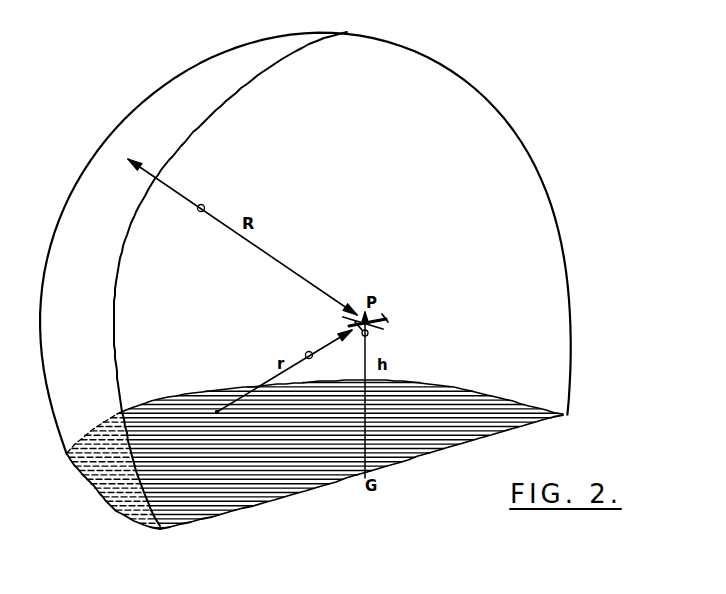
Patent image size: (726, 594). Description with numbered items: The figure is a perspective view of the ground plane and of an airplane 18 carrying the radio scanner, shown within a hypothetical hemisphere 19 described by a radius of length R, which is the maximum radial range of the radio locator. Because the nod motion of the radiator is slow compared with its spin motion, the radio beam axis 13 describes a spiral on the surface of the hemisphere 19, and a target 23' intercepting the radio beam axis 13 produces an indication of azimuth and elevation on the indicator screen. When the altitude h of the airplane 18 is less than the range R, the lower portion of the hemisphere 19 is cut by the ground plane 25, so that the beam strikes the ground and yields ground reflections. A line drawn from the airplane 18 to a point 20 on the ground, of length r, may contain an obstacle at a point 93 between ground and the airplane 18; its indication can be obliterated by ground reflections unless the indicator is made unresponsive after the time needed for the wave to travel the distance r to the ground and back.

The hemisphere 19 is at (497, 108).
The ground plane 25 is at (138, 522).
The radio beam axis 13 is at (284, 262).
The target 23' is at (219, 194).
The point on the ground 20 is at (215, 412).
The point between ground and airplane 93 is at (310, 352).
The airplane 18 is at (362, 335).